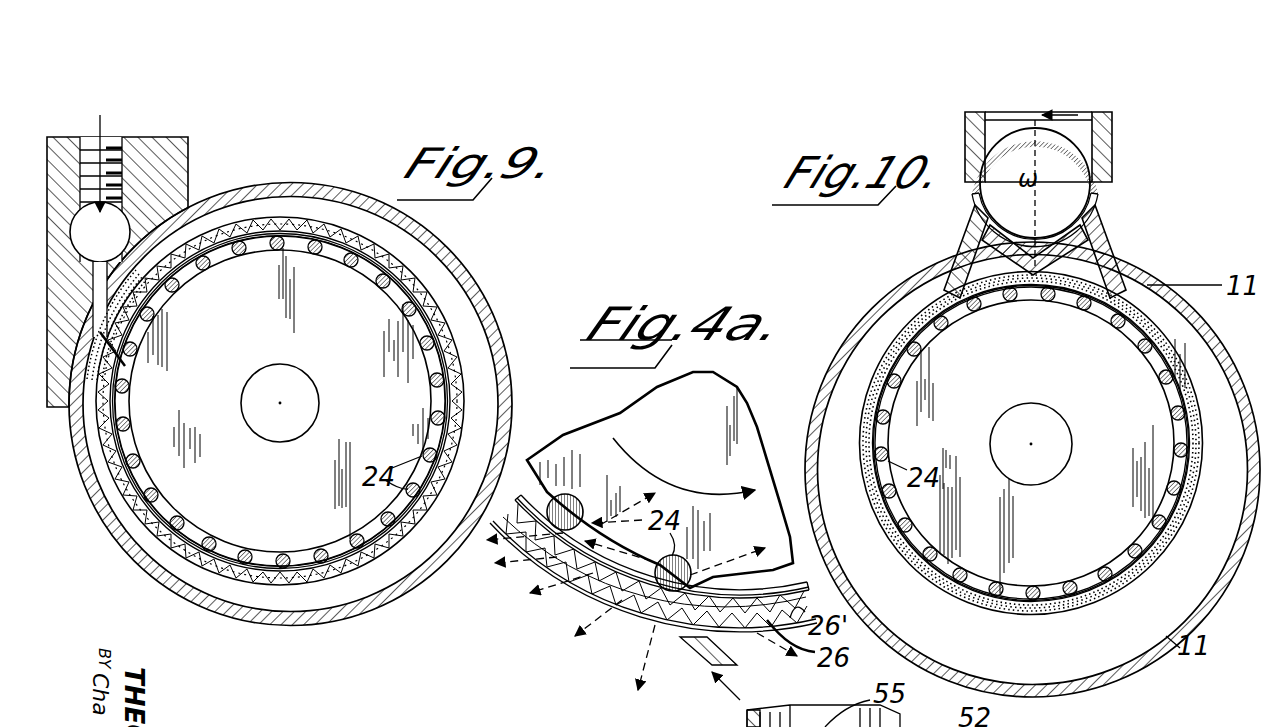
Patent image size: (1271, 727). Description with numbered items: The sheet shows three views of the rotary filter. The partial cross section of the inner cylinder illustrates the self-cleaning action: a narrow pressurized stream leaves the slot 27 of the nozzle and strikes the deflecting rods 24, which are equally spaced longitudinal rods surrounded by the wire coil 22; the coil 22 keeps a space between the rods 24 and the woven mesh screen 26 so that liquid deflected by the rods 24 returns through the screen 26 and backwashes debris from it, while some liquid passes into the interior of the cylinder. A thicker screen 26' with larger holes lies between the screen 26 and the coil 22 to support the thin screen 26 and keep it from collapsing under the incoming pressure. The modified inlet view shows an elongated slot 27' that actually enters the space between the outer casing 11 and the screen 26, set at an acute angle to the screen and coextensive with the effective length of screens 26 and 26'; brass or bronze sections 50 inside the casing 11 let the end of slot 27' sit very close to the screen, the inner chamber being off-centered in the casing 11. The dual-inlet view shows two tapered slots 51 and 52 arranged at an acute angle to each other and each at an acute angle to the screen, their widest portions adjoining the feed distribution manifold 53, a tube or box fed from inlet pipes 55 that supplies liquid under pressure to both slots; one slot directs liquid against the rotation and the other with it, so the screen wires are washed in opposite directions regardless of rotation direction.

In FIG. 9, the outer casing 11 is at (478, 276).
In FIG. 10, the outer casing 11 is at (1112, 117).
In FIG. 9, the wire coil 22 is at (250, 550).
In FIG. 10, the wire coil 22 is at (950, 326).
In FIG. 9, the round rods 24 is at (345, 258).
In FIG. 4A, the round rods 24 is at (565, 496).
In FIG. 10, the round rods 24 is at (1135, 340).
In FIG. 9, the woven mesh screen 26 is at (297, 389).
In FIG. 4A, the woven mesh screen 26 is at (649, 568).
In FIG. 10, the woven mesh screen 26 is at (1035, 443).
In FIG. 9, the thicker screen 26' is at (280, 368).
In FIG. 4A, the thicker screen 26' is at (662, 565).
In FIG. 10, the thicker screen 26' is at (1031, 444).
In FIG. 4A, the slot 27 is at (700, 670).
In FIG. 9, the slot 27' is at (88, 356).
In FIG. 9, the brass or bronze sections 50 is at (88, 386).
In FIG. 10, the slot 51 is at (966, 252).
In FIG. 10, the slot 52 is at (1114, 250).
In FIG. 10, the feed distribution manifold 53 is at (1092, 181).
In FIG. 10, the inlet pipes 55 is at (1112, 165).